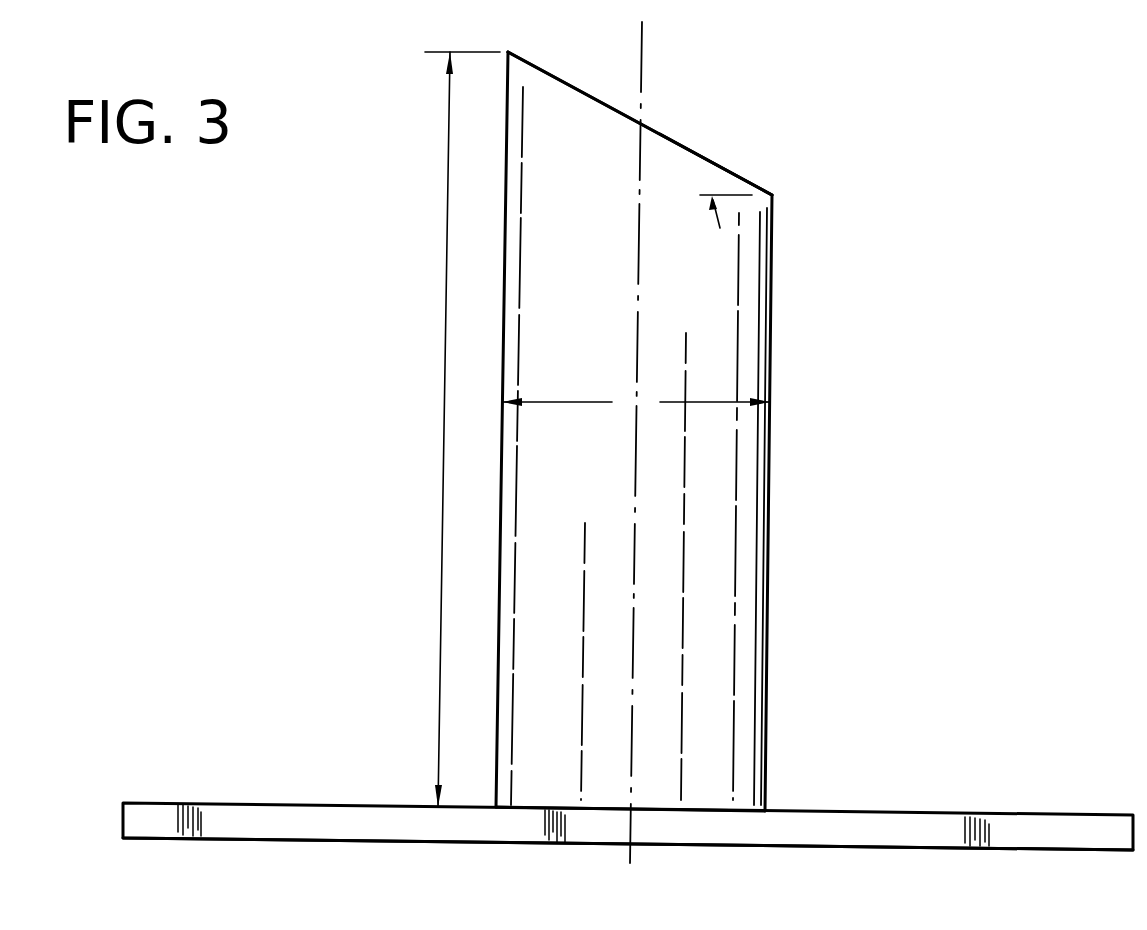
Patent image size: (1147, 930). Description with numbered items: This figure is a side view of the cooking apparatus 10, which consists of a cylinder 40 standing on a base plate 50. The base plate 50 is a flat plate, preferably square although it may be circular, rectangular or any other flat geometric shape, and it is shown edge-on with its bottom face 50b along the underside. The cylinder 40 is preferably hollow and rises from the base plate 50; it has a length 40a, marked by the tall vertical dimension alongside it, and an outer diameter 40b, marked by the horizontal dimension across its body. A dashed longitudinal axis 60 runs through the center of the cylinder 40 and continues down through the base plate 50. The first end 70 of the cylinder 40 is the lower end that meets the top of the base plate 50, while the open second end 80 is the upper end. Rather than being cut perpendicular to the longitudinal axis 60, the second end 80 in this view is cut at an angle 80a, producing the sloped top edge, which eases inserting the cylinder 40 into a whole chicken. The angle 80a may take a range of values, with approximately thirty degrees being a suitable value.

The cooking apparatus 10 is at (962, 229).
The cylinder 40 is at (728, 587).
The length 40a is at (462, 429).
The outer diameter 40b is at (636, 403).
The base plate 50 is at (927, 832).
The bottom face 50b is at (364, 843).
The longitudinal axis 60 is at (643, 77).
The first end 70 is at (767, 811).
The second end 80 is at (555, 76).
The angle 80a is at (722, 160).